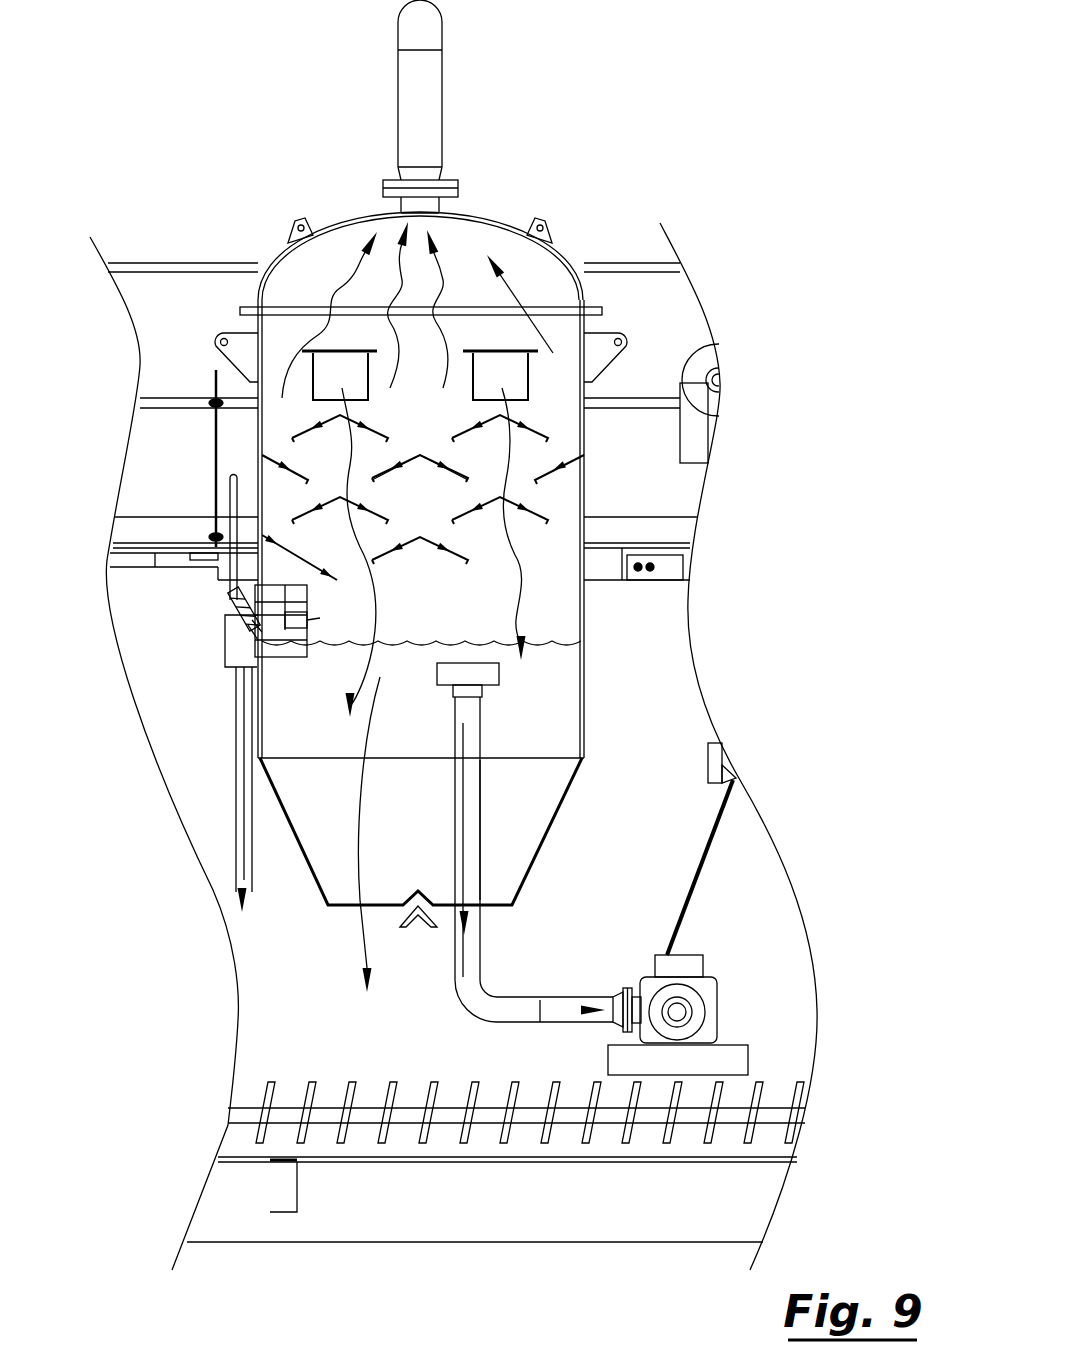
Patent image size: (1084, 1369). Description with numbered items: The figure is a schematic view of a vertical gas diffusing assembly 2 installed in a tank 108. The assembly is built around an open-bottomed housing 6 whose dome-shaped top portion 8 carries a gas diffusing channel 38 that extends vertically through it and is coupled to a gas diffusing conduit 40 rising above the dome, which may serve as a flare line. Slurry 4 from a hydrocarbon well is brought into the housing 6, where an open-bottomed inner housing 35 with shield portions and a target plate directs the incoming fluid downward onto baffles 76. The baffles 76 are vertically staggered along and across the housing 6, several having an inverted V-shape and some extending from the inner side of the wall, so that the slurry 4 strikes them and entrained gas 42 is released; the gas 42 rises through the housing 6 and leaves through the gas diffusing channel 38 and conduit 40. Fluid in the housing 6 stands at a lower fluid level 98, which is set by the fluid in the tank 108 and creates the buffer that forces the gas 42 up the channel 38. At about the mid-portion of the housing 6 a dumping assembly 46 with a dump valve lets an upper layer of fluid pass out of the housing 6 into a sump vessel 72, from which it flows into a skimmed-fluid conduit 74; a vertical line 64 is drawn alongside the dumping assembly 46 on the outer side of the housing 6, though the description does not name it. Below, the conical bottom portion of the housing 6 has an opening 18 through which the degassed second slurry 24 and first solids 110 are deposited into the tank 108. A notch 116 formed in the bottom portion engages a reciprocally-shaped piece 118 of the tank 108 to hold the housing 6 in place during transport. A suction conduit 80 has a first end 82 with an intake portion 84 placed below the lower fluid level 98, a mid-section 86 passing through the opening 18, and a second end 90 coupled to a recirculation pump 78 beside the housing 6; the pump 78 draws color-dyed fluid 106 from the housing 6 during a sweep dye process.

The vertical gas diffusing assembly 2 is at (318, 182).
The slurry 4 is at (347, 475).
The open-bottomed housing 6 is at (583, 503).
The top portion 8 is at (503, 222).
The opening 18 is at (345, 900).
The second slurry 24 is at (522, 587).
The inner housing 35 is at (330, 355).
The gas diffusing channel 38 is at (425, 210).
The gas diffusing conduit 40 is at (430, 80).
The gas 42 is at (332, 288).
The dumping assembly 46 is at (207, 599).
The water supply pipe 64 is at (235, 495).
The sump vessel 72 is at (226, 637).
The skimmed-fluid conduit 74 is at (237, 767).
The baffles 76 is at (300, 433).
The recirculation pump 78 is at (700, 990).
The suction conduit 80 is at (470, 767).
The first end 82 is at (458, 722).
The intake portion 84 is at (497, 687).
The mid-section 86 is at (473, 835).
The second end 90 is at (570, 998).
The lower fluid level 98 is at (577, 643).
The color-dyed fluid 106 is at (538, 1013).
The tank 108 is at (262, 1280).
The first solids 110 is at (367, 943).
The notch 116 is at (415, 888).
The reciprocally-shaped piece 118 is at (412, 925).